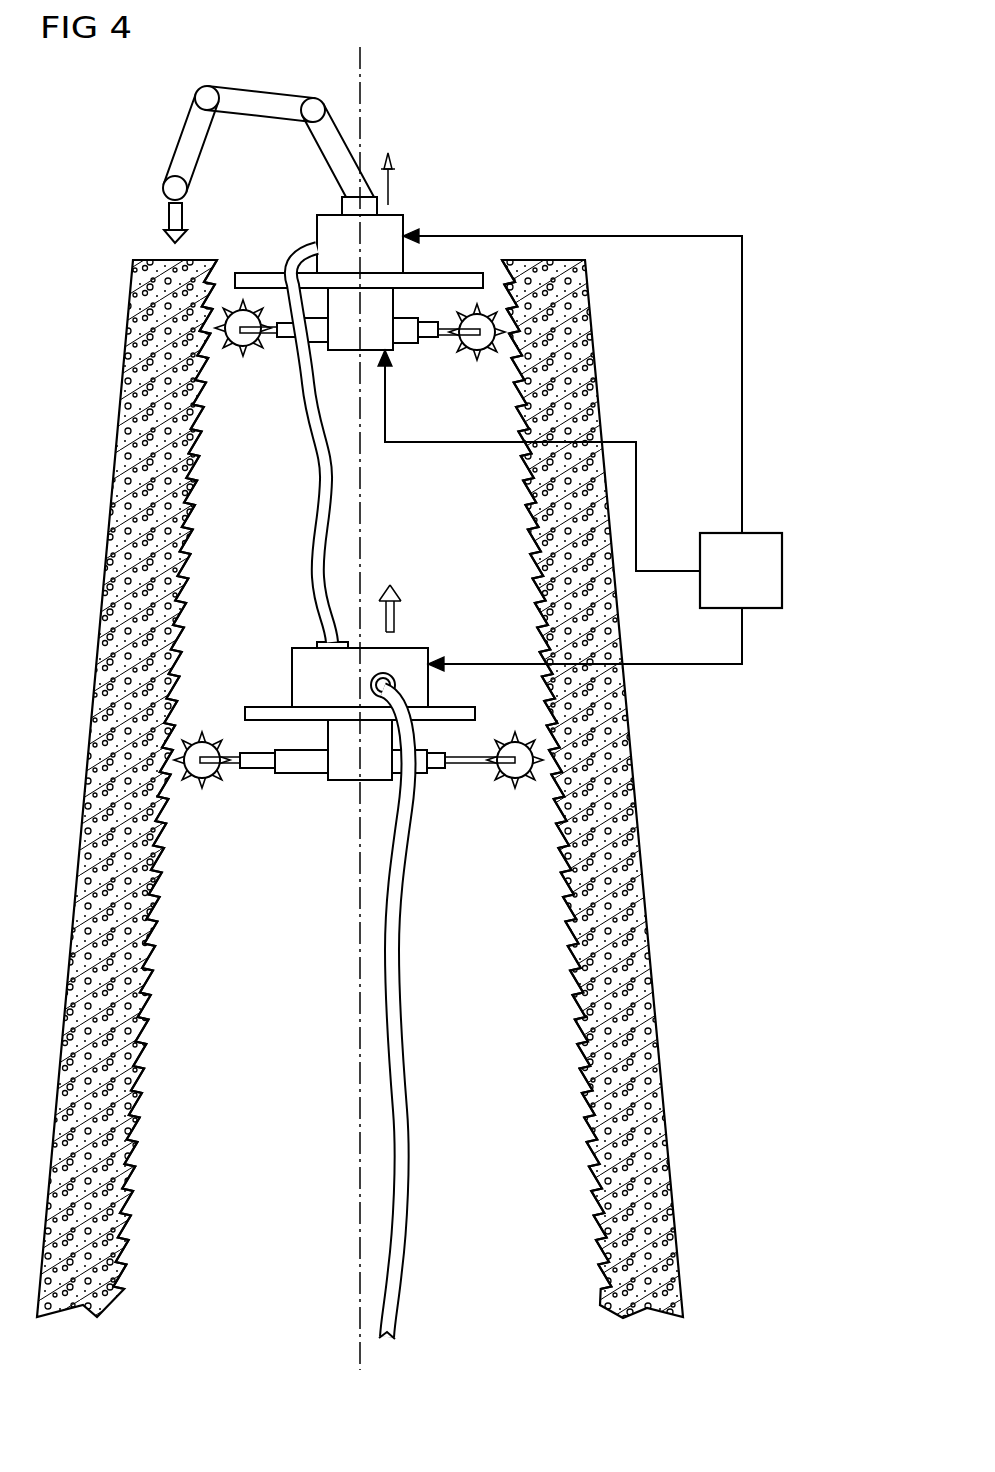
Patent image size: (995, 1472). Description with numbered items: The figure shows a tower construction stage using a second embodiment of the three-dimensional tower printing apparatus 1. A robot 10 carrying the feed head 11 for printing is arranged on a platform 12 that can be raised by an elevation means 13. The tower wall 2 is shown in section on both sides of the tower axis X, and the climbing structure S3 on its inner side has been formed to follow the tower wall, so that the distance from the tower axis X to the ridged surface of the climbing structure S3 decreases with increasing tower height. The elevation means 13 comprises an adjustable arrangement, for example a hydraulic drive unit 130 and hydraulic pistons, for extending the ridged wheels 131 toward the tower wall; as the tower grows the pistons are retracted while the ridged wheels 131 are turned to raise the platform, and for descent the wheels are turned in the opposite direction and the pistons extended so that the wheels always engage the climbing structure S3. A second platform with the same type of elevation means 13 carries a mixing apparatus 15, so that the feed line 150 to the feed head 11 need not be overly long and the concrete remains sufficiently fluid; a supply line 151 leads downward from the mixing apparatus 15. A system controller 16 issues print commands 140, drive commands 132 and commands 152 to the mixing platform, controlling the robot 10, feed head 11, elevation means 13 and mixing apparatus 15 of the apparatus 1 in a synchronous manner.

The 3D tower printing apparatus 1 is at (358, 746).
The tower segment 2 is at (590, 307).
The robot 10 is at (267, 103).
The feed head 11 is at (170, 214).
The platform 12 is at (260, 272).
The elevation means 13 is at (412, 347).
The drive unit 130 is at (345, 338).
The ridged wheels 131 is at (244, 357).
The drive commands 132 is at (629, 435).
The print commands 140 is at (557, 235).
The mixing apparatus 15 is at (303, 675).
The feed line 150 is at (325, 495).
The supply cable 151 is at (404, 1113).
The control line 152 is at (690, 670).
The system controller 16 is at (768, 530).
The climbing structure S3 is at (147, 1000).
The tower axis X is at (360, 1115).